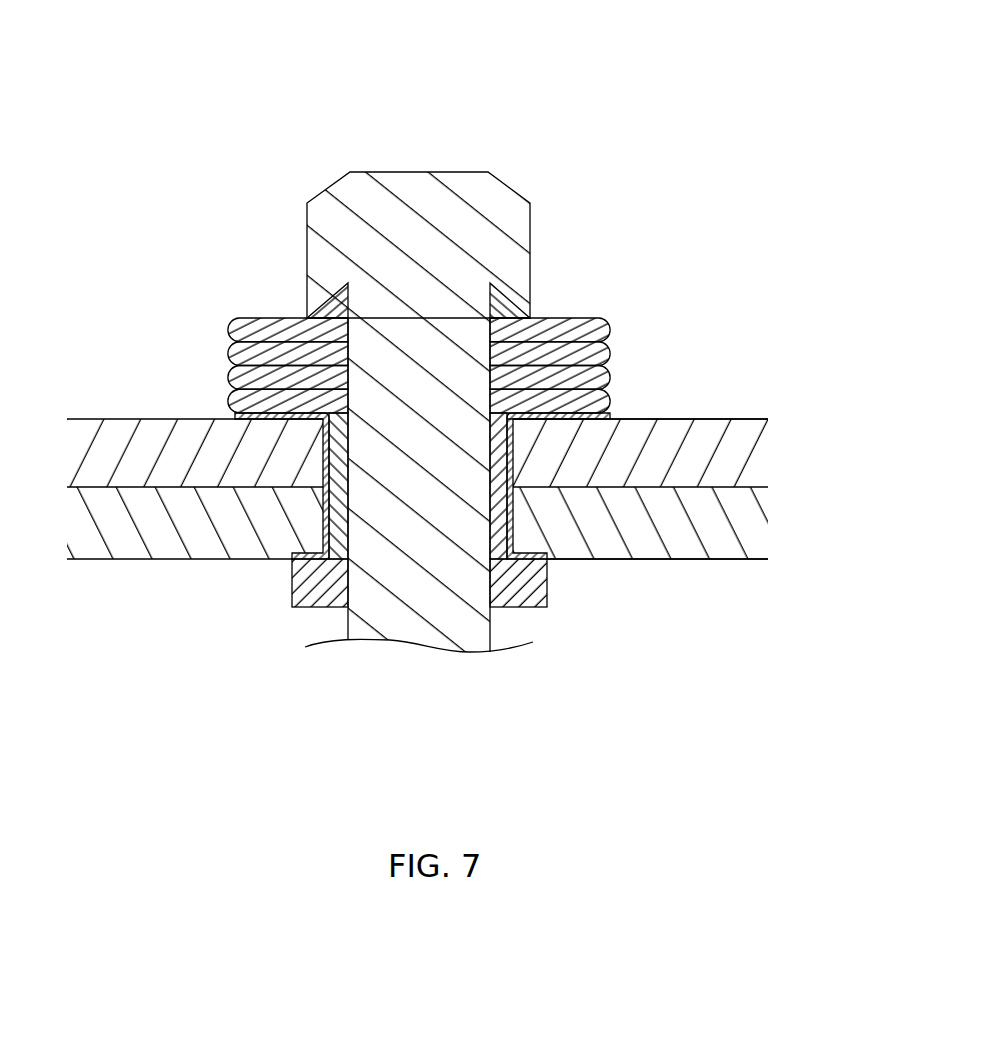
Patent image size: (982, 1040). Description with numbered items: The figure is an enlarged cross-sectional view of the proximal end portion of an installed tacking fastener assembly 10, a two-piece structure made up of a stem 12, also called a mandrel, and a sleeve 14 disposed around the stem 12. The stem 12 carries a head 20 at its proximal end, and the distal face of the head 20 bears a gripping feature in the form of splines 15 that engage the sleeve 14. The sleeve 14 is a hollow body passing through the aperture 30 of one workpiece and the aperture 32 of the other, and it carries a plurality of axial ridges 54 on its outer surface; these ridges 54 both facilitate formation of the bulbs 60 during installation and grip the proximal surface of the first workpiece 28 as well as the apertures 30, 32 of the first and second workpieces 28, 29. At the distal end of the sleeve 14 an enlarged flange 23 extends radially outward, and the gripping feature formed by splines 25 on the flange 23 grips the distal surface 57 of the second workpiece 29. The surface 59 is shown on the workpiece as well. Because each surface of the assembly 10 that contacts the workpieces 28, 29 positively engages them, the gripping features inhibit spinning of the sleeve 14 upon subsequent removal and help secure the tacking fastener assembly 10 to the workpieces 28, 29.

The tacking rivet assembly 10 is at (637, 60).
The stem 12 is at (393, 618).
The head 20 is at (494, 208).
The sleeve 14 is at (590, 317).
The splines 15 is at (288, 334).
The bulbs 60 is at (611, 346).
The axial ridges 54 is at (318, 470).
The aperture 32 is at (520, 445).
The aperture 30 is at (520, 515).
The first workpiece 28 is at (735, 462).
The second workpiece 29 is at (723, 520).
The upper surface of first panel 59 is at (736, 420).
The distal surface 57 is at (710, 560).
The splines 25 is at (308, 547).
The flange 23 is at (543, 590).